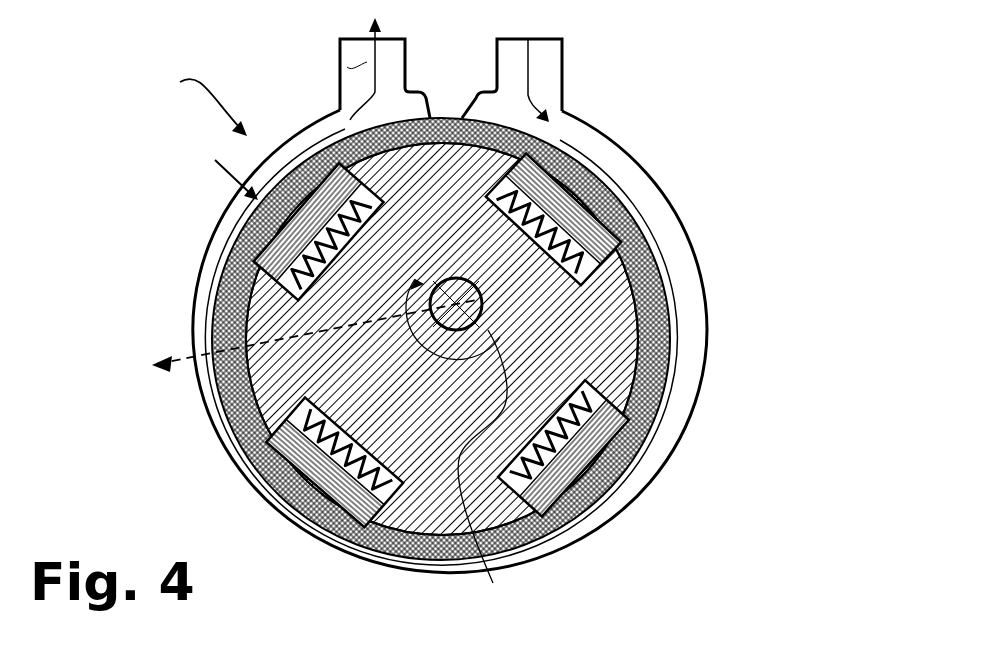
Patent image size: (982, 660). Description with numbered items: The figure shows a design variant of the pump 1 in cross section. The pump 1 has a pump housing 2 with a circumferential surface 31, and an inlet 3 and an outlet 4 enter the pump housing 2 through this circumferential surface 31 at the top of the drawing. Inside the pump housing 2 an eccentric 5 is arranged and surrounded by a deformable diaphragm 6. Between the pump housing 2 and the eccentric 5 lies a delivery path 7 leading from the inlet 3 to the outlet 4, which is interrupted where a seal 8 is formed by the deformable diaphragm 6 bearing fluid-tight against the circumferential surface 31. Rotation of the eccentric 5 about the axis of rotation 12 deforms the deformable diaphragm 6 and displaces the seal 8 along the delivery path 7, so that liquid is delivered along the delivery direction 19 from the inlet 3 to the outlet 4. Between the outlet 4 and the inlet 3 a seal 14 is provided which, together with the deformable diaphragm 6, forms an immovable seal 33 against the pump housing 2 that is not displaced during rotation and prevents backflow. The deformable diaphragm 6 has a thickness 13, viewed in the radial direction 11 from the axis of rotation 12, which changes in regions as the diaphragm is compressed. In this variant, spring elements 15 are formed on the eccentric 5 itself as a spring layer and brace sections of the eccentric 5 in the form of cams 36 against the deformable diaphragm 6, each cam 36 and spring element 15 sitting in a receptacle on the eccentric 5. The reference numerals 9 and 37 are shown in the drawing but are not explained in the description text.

The pump 1 is at (201, 96).
The pump housing 2 is at (640, 150).
The inlet 3 is at (547, 38).
The outlet 4 is at (350, 36).
The eccentric 5 is at (670, 295).
The deformable diaphragm 6 is at (678, 340).
The delivery path 7 is at (650, 465).
The seal 8 is at (335, 540).
The sealing line 9 is at (482, 475).
The radial direction 11 is at (183, 360).
The axis of rotation 12 is at (457, 332).
The thickness 13 is at (228, 182).
The seal 14 is at (429, 118).
The spring element 15 is at (517, 220).
The delivery direction 19 is at (347, 67).
The circumferential surface 31 is at (608, 508).
The immovable seal 33 is at (452, 118).
The cam 36 is at (632, 207).
The ring inner surface 37 is at (603, 248).